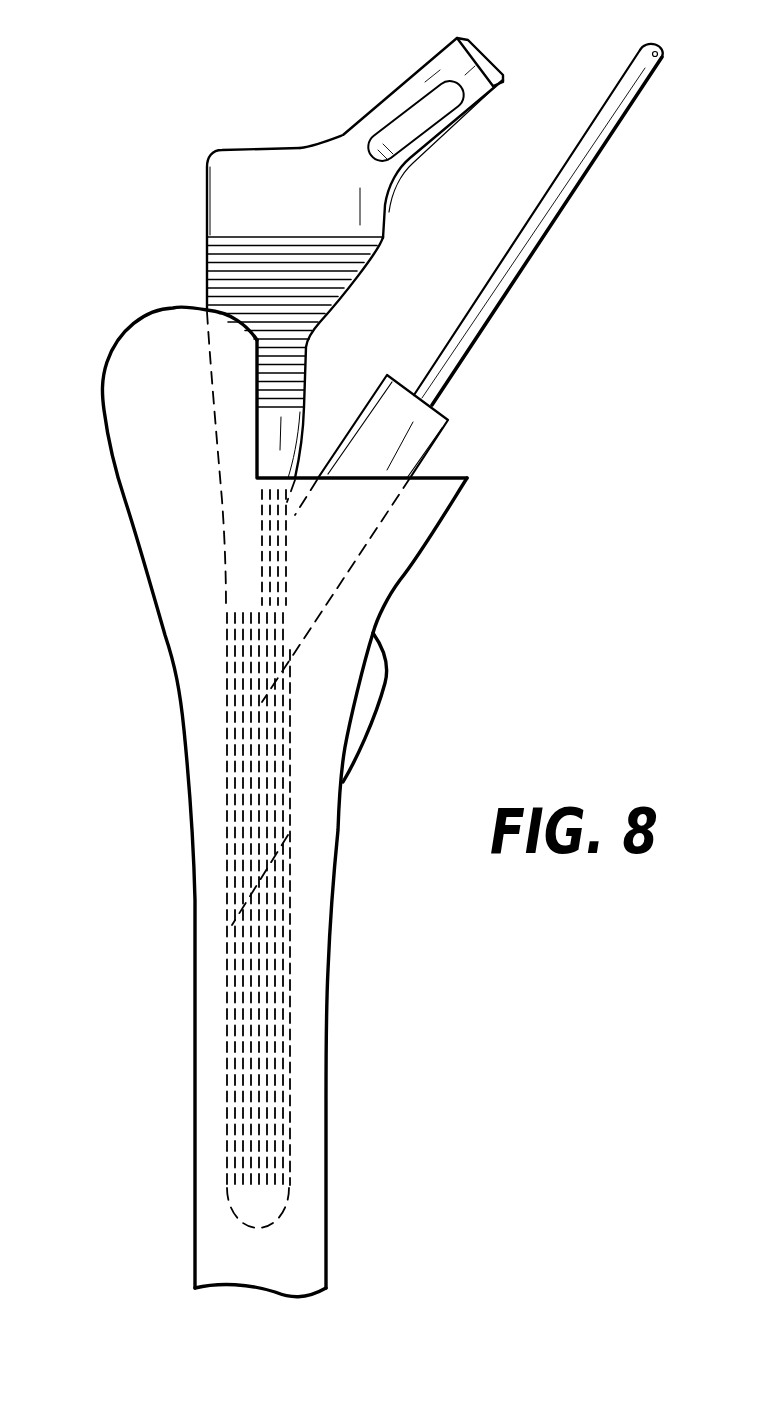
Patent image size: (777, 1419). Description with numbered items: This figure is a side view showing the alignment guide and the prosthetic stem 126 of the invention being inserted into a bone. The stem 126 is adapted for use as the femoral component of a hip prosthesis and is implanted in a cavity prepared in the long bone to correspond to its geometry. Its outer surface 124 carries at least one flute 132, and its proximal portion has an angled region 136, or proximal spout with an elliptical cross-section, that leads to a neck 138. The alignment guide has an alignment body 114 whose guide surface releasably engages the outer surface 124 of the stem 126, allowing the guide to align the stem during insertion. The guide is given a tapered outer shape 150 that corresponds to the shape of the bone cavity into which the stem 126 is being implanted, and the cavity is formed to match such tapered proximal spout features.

The alignment body 114 is at (398, 430).
The outer surface 124 is at (237, 550).
The prosthetic stem 126 is at (150, 204).
The flute 132 is at (242, 984).
The angled region 136 is at (373, 264).
The neck 138 is at (418, 68).
The tapered outer shape 150 is at (433, 457).